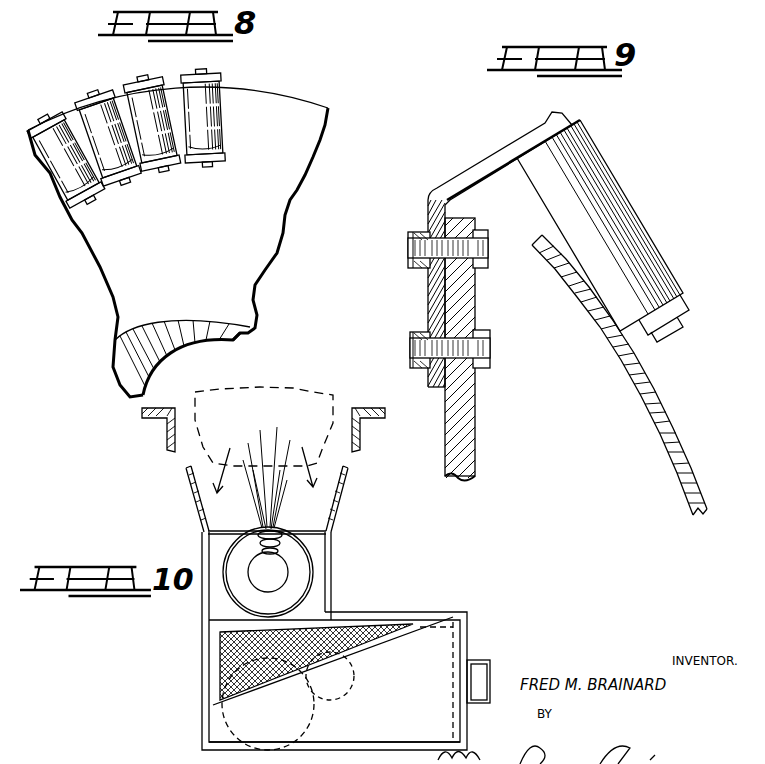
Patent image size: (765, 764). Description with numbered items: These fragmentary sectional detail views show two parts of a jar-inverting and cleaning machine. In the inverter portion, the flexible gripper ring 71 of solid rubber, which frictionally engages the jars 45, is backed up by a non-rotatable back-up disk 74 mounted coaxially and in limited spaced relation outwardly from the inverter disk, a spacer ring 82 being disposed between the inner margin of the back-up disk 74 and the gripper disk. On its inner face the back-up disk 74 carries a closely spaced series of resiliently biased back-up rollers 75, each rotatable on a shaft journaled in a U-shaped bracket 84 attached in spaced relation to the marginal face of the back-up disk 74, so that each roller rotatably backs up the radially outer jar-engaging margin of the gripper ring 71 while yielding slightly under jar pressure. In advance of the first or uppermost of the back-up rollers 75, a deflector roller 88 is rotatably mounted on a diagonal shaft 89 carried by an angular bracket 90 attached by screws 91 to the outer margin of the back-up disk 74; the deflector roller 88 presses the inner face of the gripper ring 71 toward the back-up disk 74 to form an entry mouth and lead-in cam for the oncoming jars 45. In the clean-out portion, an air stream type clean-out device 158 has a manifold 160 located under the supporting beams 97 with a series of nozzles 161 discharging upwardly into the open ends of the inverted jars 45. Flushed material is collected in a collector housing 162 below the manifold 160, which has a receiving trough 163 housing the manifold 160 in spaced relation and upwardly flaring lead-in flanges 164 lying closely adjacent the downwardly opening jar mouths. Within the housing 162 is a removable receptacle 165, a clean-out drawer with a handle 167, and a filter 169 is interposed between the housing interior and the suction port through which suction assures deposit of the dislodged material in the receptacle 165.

In FIG. 8, the back-up disk 74 is at (252, 256).
In FIG. 9, the back-up disk 74 is at (467, 423).
In FIG. 8, the back-up rollers 75 is at (97, 117).
In FIG. 8, the spacer ring 82 is at (148, 338).
In FIG. 8, the U-shaped bracket 84 is at (55, 112).
In FIG. 9, the deflector roller 88 is at (604, 190).
In FIG. 9, the diagonal shaft 89 is at (672, 345).
In FIG. 9, the angular bracket 90 is at (484, 167).
In FIG. 9, the screws 91 is at (412, 243).
In FIG. 9, the flexible gripper ring 71 is at (667, 423).
In FIG. 10, the jars 45 is at (313, 388).
In FIG. 10, the supporting beams 97 is at (154, 418).
In FIG. 10, the air stream type clean-out device 158 is at (361, 568).
In FIG. 10, the manifold 160 is at (300, 567).
In FIG. 10, the nozzles 161 is at (274, 531).
In FIG. 10, the collector housing 162 is at (210, 650).
In FIG. 10, the receiving trough 163 is at (206, 532).
In FIG. 10, the lead-in flanges 164 is at (188, 483).
In FIG. 10, the removable receptacle 165 is at (452, 721).
In FIG. 10, the handle 167 is at (488, 667).
In FIG. 10, the filter 169 is at (337, 632).